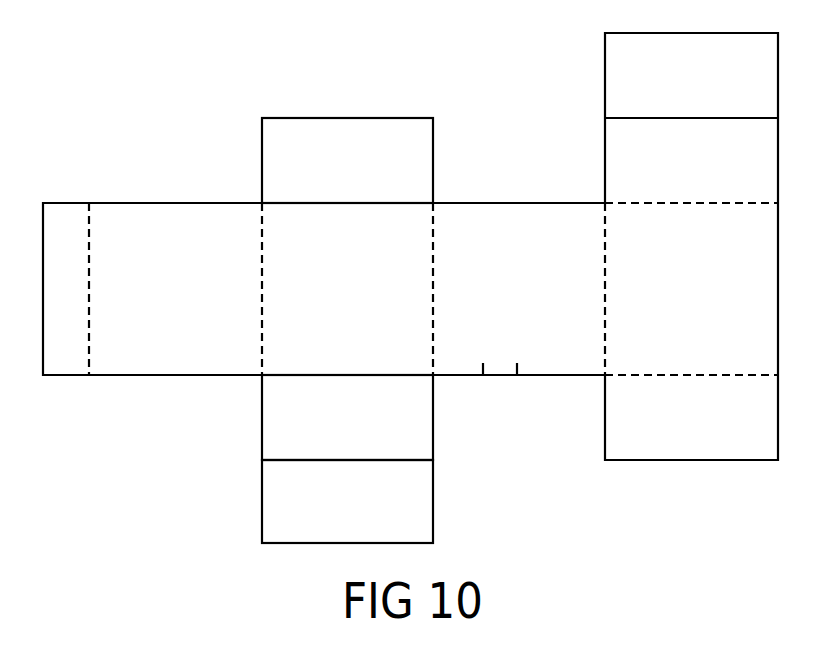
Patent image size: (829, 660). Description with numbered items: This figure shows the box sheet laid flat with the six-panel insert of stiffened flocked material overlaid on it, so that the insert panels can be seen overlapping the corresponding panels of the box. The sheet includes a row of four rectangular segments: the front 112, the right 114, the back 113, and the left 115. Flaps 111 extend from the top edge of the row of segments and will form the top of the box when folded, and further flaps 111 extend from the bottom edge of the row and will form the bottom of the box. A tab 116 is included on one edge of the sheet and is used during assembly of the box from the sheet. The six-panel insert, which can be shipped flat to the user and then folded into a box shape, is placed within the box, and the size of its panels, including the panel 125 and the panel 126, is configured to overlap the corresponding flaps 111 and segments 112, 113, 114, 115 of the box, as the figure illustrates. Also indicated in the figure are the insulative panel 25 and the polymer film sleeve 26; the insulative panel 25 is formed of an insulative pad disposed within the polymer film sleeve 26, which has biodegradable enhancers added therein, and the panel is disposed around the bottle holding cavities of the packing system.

The flaps 111 is at (368, 172).
The front segment 112 is at (539, 301).
The back segment 113 is at (197, 302).
The right segment 114 is at (712, 302).
The left segment 115 is at (368, 302).
The tab 116 is at (65, 228).
The panel 125 is at (712, 88).
The panel 126 is at (368, 513).
The insulative panel 25 is at (517, 363).
The polymer film sleeve 26 is at (483, 363).